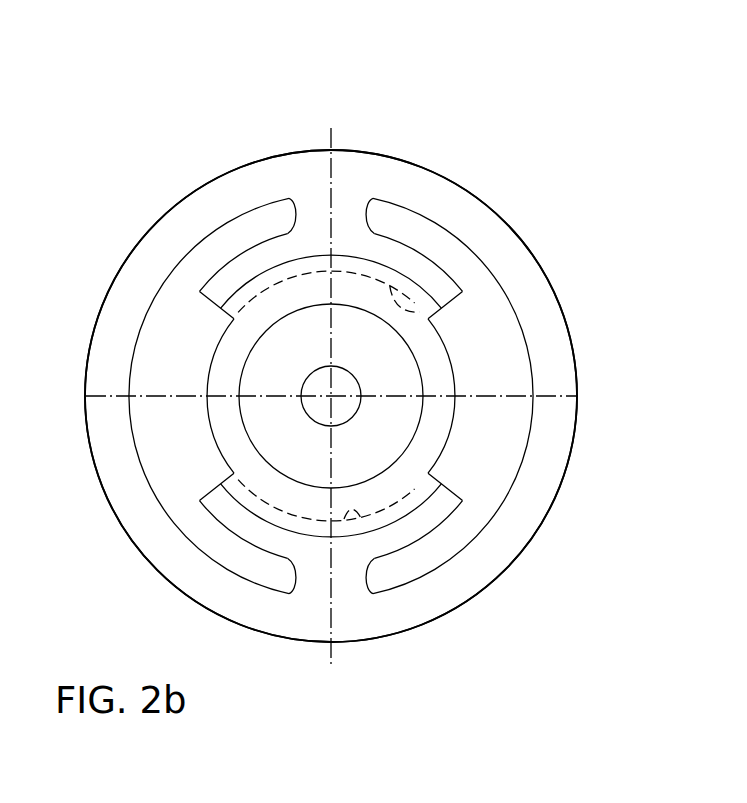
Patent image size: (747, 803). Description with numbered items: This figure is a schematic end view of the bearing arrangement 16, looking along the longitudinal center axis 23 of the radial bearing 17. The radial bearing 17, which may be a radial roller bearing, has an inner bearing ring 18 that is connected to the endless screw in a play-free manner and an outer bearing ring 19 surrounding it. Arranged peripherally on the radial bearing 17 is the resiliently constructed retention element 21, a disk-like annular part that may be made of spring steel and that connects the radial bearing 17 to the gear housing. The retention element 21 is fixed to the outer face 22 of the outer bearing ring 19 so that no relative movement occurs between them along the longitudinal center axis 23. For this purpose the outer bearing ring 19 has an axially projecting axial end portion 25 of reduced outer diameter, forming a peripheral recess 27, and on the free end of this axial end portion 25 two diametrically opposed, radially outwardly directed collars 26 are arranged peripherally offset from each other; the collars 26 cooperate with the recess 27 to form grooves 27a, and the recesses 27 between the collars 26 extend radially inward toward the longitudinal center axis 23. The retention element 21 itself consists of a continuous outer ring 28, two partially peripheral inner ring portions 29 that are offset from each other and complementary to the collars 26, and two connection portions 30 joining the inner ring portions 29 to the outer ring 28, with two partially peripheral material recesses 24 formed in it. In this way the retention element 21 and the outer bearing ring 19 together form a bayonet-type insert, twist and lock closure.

The bearing arrangement 16 is at (612, 267).
The radial bearing 17 is at (453, 442).
The inner bearing ring 18 is at (432, 457).
The outer bearing ring 19 is at (457, 380).
The retention element 21 is at (363, 148).
The outer face 22 is at (473, 415).
The longitudinal center axis 23 is at (325, 398).
The material recess 24 is at (175, 282).
The axial end portion 25 is at (457, 380).
The collar 26 is at (373, 267).
The recess 27 is at (470, 348).
The groove 27a is at (430, 302).
The outer ring 28 is at (488, 572).
The inner ring portion 29 is at (253, 263).
The connection portion 30 is at (363, 200).